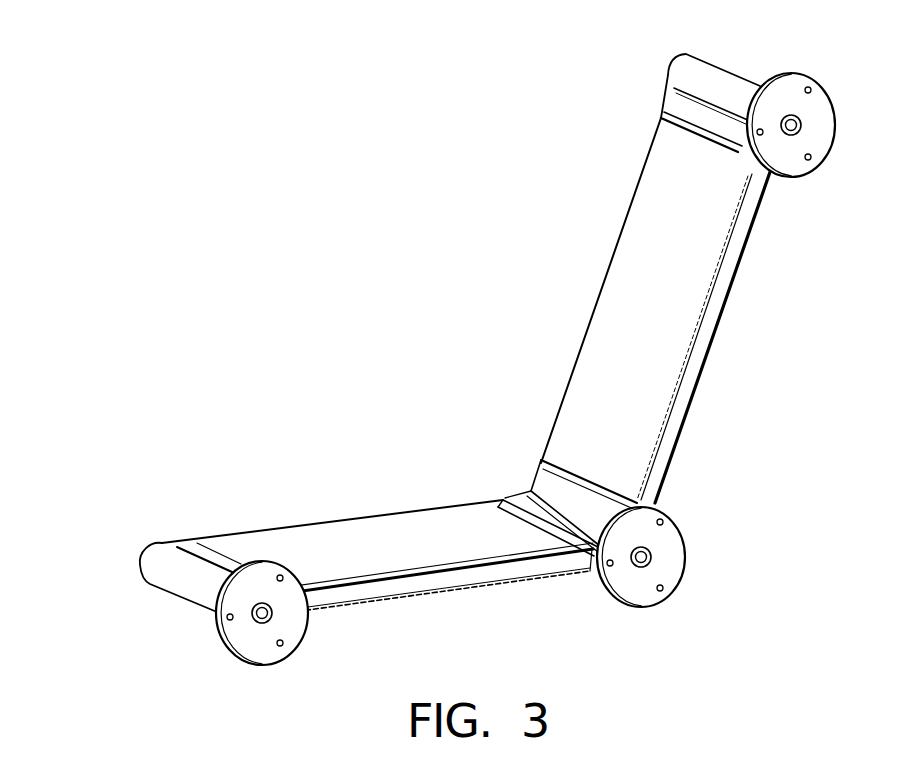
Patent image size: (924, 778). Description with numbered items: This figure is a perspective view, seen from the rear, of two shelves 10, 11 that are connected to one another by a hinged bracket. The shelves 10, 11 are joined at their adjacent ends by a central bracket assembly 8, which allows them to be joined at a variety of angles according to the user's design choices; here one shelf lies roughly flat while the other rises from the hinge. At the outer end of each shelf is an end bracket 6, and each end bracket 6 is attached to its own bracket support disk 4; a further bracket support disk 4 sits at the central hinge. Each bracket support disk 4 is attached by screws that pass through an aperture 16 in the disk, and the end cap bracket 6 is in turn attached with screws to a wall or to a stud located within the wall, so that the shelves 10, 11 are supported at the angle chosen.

The bracket support disk 4 is at (680, 552).
The end bracket 6 is at (657, 30).
The central bracket assembly 8 is at (510, 435).
The shelf 10 is at (373, 537).
The shelf 11 is at (618, 310).
The aperture 16 is at (662, 520).